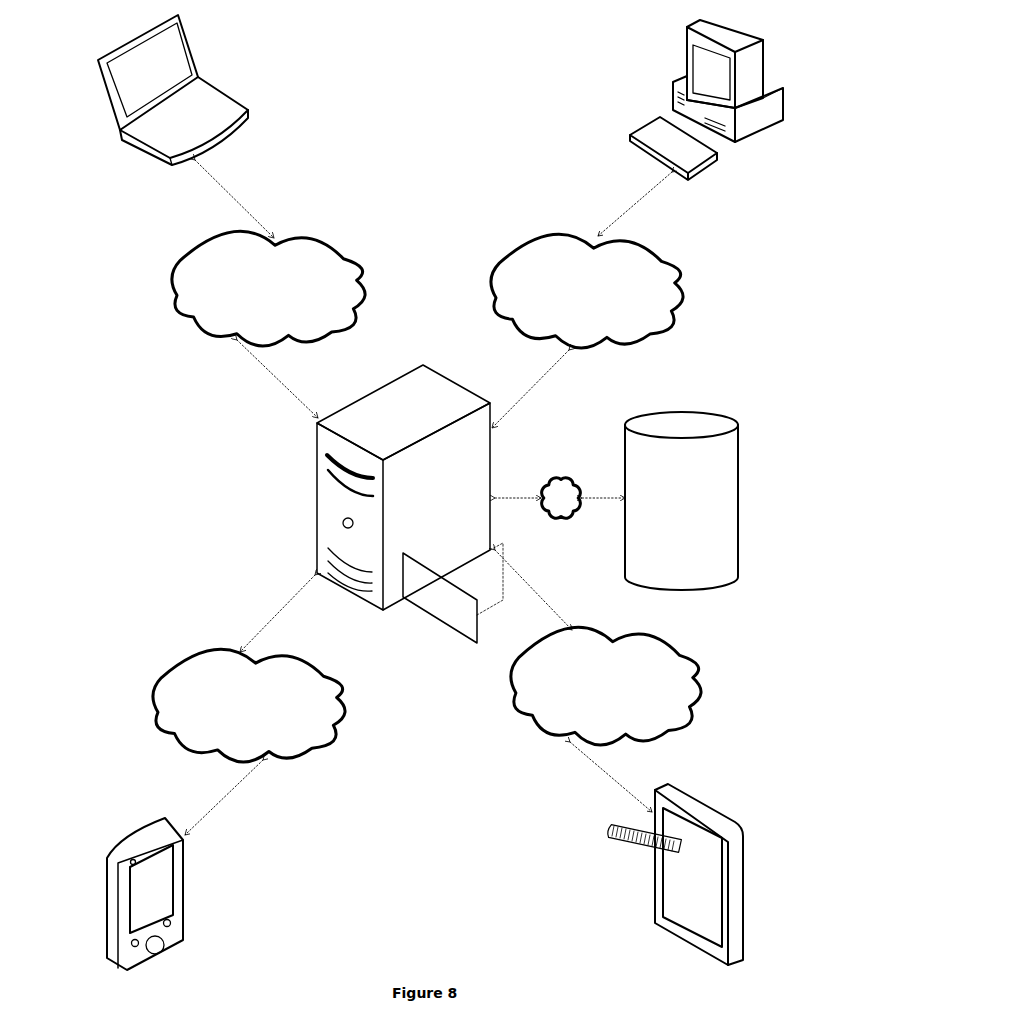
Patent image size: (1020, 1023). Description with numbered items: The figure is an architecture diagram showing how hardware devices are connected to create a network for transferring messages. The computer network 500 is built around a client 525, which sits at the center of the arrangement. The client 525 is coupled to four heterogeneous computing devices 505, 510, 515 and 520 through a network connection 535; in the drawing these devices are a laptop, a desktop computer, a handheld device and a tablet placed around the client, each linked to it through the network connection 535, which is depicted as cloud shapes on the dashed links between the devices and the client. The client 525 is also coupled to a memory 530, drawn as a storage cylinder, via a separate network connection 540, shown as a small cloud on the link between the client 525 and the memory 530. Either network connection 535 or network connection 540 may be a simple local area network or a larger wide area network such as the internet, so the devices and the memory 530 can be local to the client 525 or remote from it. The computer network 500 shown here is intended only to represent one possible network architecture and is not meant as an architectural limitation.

The computer network 500 is at (168, 465).
The heterogeneous computing device 505 is at (200, 75).
The heterogeneous computing device 510 is at (680, 67).
The heterogeneous computing device 515 is at (183, 907).
The heterogeneous computing device 520 is at (657, 903).
The client 525 is at (317, 519).
The memory 530 is at (681, 501).
The network connection 535 is at (427, 496).
The network connection 540 is at (561, 498).